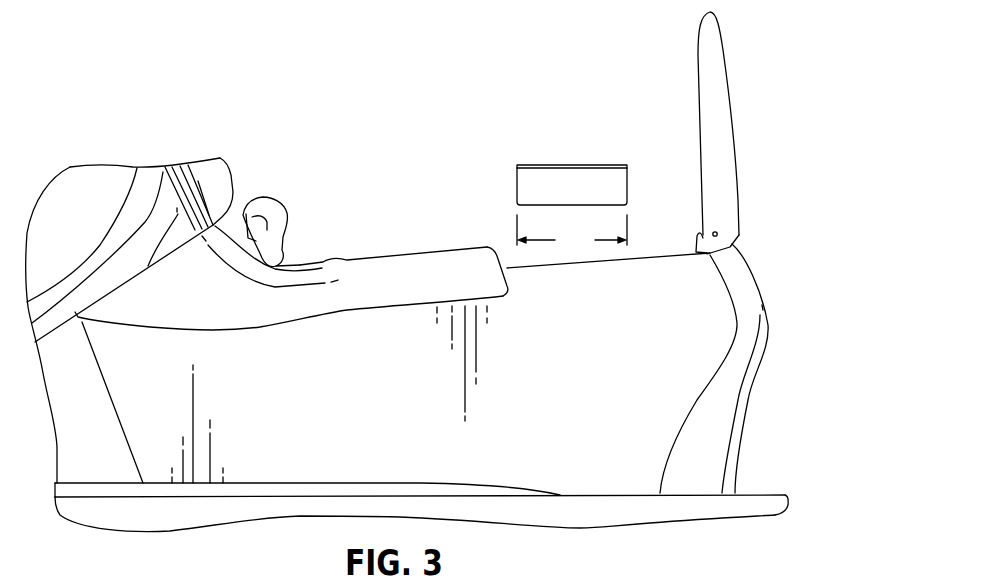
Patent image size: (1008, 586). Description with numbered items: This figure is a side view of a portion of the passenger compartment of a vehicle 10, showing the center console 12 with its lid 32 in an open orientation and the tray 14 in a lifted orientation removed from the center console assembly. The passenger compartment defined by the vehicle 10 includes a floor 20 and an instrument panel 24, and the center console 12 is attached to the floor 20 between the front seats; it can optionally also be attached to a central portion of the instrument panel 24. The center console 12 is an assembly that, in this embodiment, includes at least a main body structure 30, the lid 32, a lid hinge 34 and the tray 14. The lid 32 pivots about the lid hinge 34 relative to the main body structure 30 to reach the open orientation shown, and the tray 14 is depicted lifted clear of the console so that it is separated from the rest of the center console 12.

The vehicle 10 is at (588, 74).
The center console 12 is at (397, 255).
The tray 14 is at (533, 163).
The floor 20 is at (177, 508).
The instrument panel 24 is at (97, 192).
The main body structure 30 is at (673, 347).
The lid 32 is at (713, 125).
The lid hinge 34 is at (694, 244).